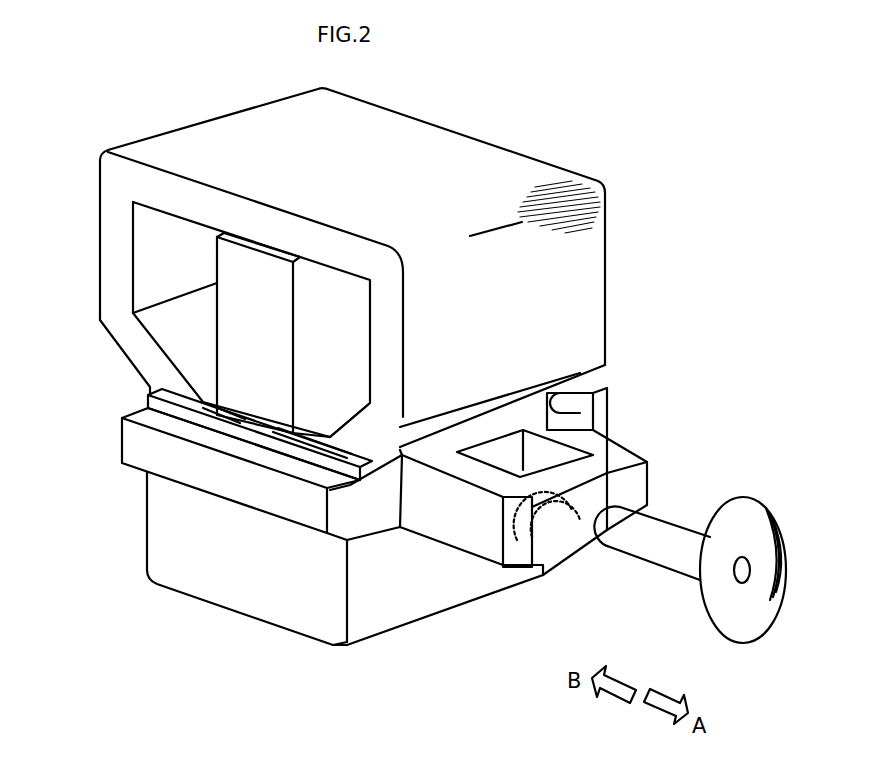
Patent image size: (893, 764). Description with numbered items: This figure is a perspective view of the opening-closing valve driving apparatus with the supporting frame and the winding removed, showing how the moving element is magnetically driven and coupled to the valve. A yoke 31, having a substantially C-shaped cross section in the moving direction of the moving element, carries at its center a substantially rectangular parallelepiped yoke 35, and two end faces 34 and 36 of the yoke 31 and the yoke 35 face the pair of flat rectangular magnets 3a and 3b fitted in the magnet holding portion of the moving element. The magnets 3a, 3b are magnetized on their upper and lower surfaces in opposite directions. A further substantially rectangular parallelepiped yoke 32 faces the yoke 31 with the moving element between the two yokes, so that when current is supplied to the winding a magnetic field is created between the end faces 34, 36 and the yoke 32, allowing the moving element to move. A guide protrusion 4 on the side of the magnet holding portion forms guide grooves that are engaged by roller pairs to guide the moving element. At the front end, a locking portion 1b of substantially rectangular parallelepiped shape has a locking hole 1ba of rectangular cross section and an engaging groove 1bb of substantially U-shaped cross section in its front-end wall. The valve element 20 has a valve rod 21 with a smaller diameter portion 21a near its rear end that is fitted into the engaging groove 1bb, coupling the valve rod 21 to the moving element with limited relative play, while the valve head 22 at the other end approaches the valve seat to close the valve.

The yoke 31 is at (218, 137).
The yoke 35 is at (233, 363).
The end face 34 is at (140, 353).
The end face 36 is at (375, 435).
The magnet 3a is at (300, 418).
The magnet 3b is at (360, 410).
The guide protrusion 4 is at (277, 500).
The locking portion 1b is at (523, 514).
The locking hole 1ba is at (565, 445).
The engaging groove 1bb is at (592, 468).
The yoke 32 is at (433, 602).
The valve element 20 is at (671, 570).
The valve rod 21 is at (655, 550).
The smaller diameter portion 21a is at (590, 523).
The valve head 22 is at (753, 622).